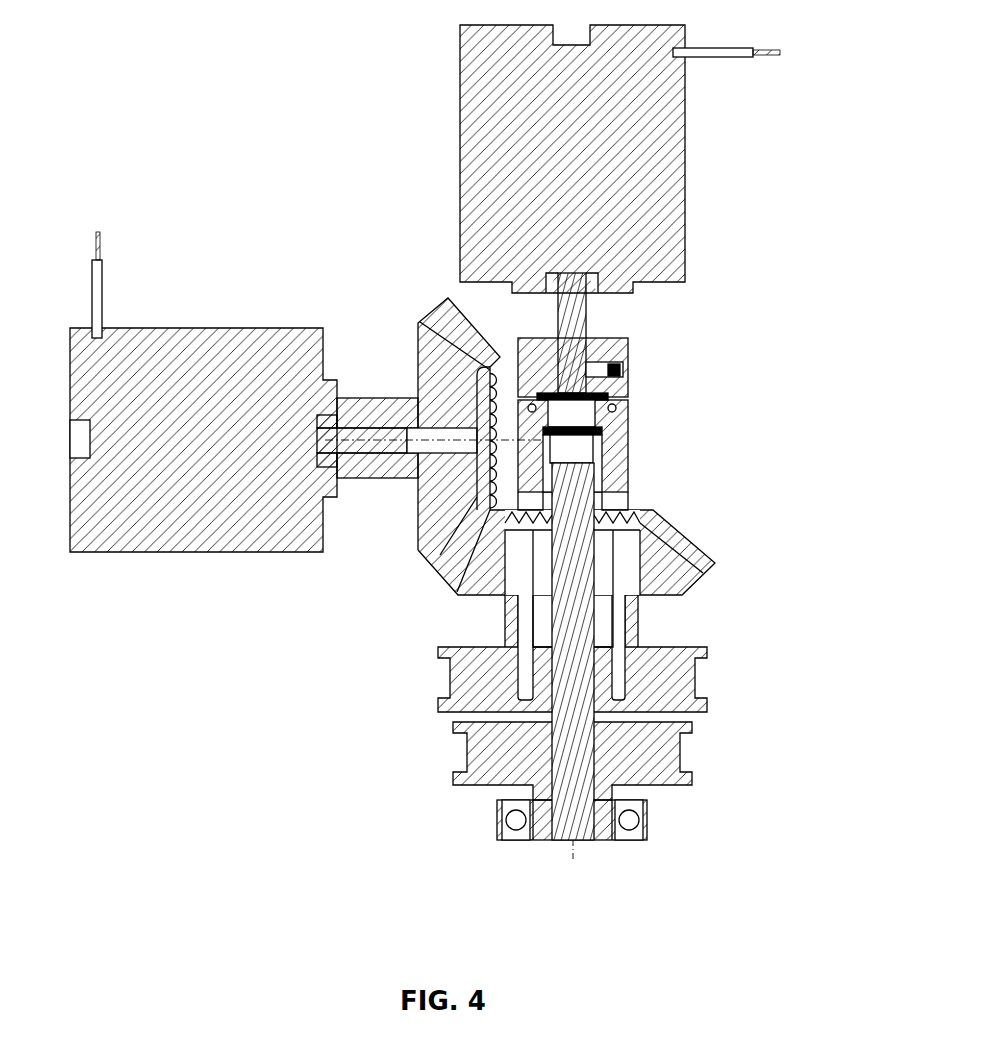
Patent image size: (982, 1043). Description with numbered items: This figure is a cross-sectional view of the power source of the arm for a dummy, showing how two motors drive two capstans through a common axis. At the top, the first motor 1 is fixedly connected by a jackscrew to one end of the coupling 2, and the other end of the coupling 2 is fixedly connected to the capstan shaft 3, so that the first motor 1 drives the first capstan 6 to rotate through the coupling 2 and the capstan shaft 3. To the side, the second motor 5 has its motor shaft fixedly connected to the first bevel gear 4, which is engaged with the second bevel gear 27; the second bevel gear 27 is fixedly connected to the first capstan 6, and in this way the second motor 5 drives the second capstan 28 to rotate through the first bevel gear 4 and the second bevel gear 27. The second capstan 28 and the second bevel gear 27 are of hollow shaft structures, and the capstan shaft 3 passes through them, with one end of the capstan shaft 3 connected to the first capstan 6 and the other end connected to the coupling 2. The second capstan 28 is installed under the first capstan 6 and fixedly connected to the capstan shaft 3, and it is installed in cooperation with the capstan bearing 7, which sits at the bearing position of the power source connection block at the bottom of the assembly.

The first motor 1 is at (657, 212).
The coupling 2 is at (628, 362).
The capstan shaft 3 is at (560, 545).
The first bevel gear 4 is at (421, 322).
The second motor 5 is at (180, 368).
The first capstan 6 is at (673, 660).
The capstan bearing 7 is at (500, 800).
The second bevel gear 27 is at (663, 517).
The second capstan 28 is at (642, 760).